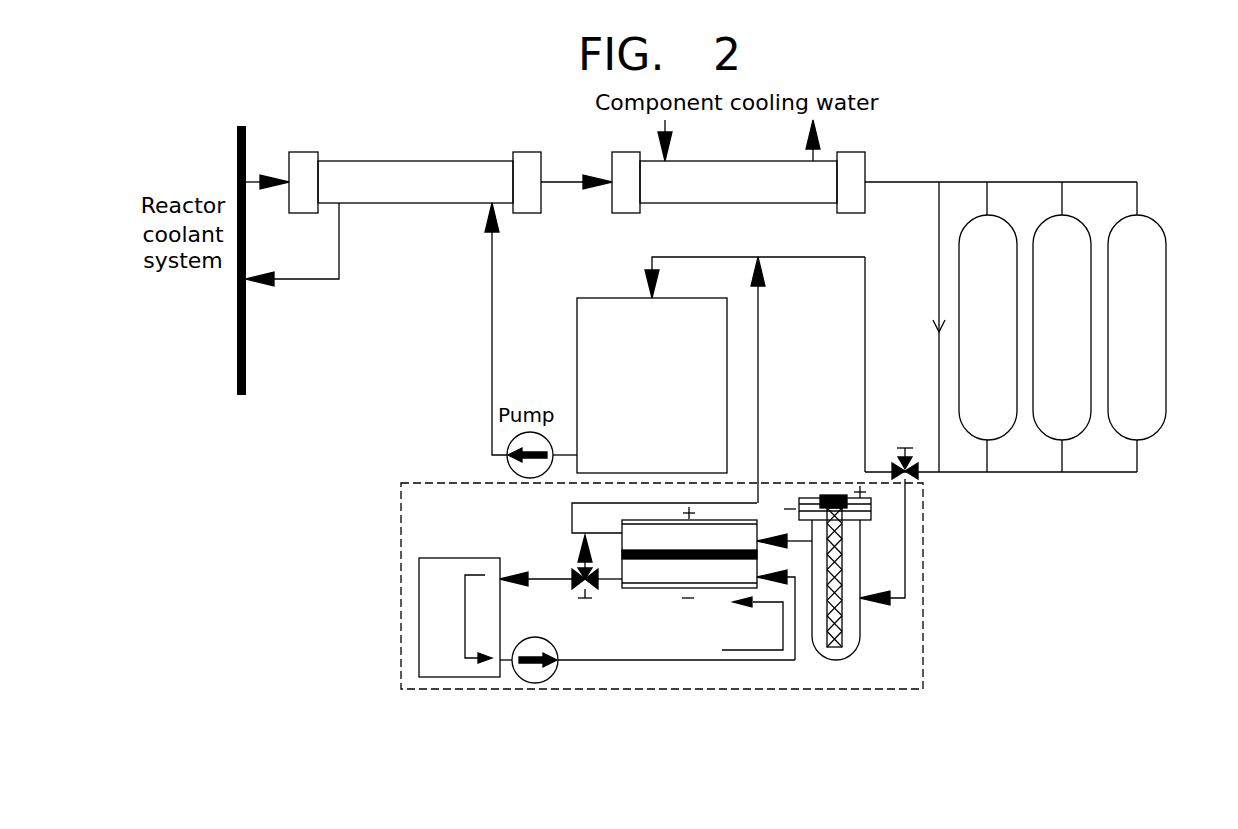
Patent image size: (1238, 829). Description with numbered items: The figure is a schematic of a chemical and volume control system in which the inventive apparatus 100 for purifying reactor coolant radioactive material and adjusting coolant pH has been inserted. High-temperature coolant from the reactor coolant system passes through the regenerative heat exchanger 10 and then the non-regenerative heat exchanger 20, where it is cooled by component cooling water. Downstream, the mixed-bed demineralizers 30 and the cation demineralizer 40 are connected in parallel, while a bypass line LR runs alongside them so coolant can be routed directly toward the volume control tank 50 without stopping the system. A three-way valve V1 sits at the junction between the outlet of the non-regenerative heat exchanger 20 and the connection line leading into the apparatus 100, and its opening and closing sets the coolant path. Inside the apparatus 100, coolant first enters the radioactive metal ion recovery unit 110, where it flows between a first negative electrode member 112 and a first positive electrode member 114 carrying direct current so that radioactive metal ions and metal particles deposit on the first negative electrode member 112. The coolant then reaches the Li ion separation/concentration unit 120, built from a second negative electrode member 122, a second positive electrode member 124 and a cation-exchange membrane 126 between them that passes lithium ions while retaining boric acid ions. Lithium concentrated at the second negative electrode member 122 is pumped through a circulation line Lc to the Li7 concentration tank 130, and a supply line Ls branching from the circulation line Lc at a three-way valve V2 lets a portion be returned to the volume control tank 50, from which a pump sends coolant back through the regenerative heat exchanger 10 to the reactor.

The regenerative heat exchanger 10 is at (415, 160).
The non-regenerative heat exchanger 20 is at (865, 152).
The mixed-bed demineralizer 30 is at (963, 218).
The cation demineralizer 40 is at (1112, 218).
The volume control tank 50 is at (598, 296).
The apparatus for purifying reactor coolant radioactive material and adjusting pH 100 is at (423, 486).
The radioactive metal ion recovery unit 110 is at (920, 573).
The first negative electrode member 112 is at (860, 546).
The first positive electrode member 114 is at (871, 504).
The Li ion separation/concentration unit 120 is at (701, 647).
The second negative electrode member 122 is at (653, 590).
The second positive electrode member 124 is at (713, 527).
The cation-exchange membrane 126 is at (723, 560).
The Li7 concentration tank 130 is at (418, 594).
The three-way valve V1 is at (903, 445).
The three-way valve V2 is at (590, 600).
The bypass line LR is at (938, 235).
The supply line Ls is at (568, 572).
The circulation line Lc is at (578, 662).